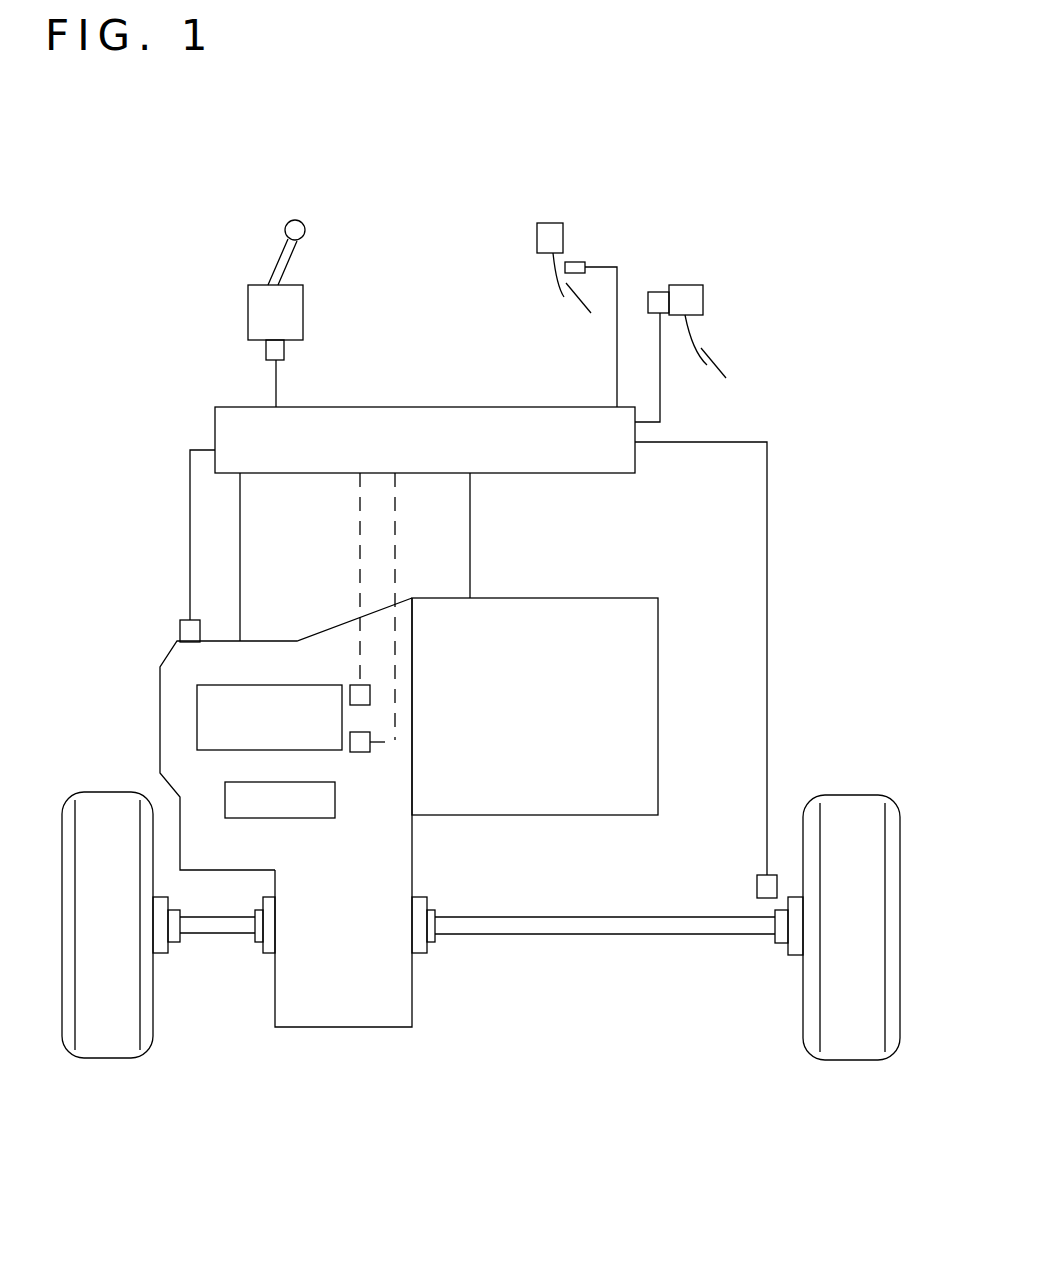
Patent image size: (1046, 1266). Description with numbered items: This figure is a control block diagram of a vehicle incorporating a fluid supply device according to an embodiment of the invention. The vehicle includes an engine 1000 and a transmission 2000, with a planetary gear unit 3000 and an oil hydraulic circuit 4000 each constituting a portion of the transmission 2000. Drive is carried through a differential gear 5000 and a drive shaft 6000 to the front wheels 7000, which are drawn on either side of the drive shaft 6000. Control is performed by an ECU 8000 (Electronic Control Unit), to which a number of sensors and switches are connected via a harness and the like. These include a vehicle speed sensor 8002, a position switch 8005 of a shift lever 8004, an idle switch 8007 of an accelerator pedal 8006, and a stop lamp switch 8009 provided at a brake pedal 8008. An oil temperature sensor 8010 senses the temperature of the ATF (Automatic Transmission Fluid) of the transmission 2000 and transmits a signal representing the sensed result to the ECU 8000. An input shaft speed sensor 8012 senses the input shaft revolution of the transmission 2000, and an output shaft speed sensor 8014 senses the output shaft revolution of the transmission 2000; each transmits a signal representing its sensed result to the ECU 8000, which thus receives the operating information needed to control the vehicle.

The engine 1000 is at (557, 598).
The transmission 2000 is at (270, 640).
The planetary gear unit 3000 is at (310, 684).
The oil hydraulic circuit 4000 is at (312, 820).
The differential gear 5000 is at (343, 1028).
The drive shaft 6000 is at (216, 935).
The front wheel 7000 is at (100, 792).
The ECU 8000 is at (515, 407).
The vehicle speed sensor 8002 is at (757, 880).
The shift lever 8004 is at (293, 251).
The position switch 8005 is at (265, 352).
The accelerator pedal 8006 is at (690, 333).
The idle switch 8007 is at (660, 292).
The brake pedal 8008 is at (557, 285).
The stop lamp switch 8009 is at (573, 262).
The oil temperature sensor 8010 is at (180, 627).
The input shaft speed sensor 8012 is at (372, 692).
The output shaft speed sensor 8014 is at (360, 753).